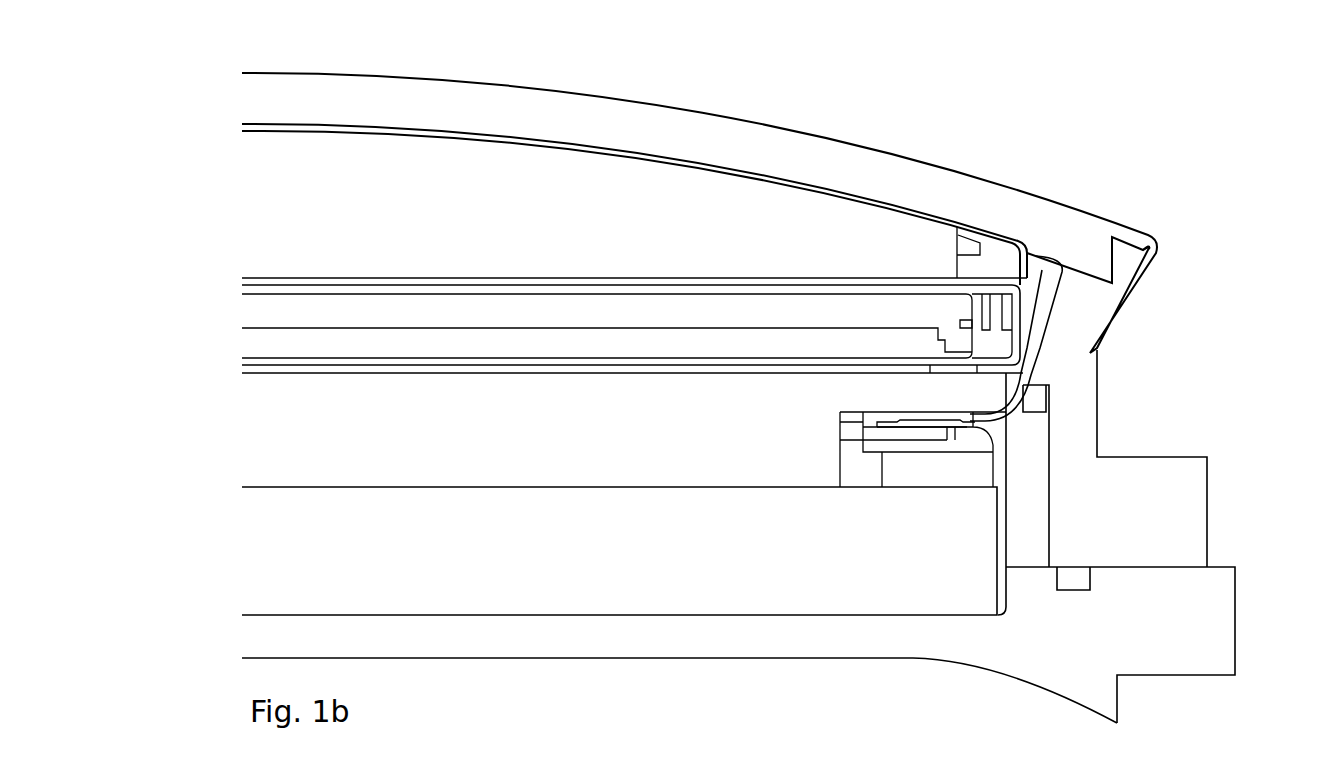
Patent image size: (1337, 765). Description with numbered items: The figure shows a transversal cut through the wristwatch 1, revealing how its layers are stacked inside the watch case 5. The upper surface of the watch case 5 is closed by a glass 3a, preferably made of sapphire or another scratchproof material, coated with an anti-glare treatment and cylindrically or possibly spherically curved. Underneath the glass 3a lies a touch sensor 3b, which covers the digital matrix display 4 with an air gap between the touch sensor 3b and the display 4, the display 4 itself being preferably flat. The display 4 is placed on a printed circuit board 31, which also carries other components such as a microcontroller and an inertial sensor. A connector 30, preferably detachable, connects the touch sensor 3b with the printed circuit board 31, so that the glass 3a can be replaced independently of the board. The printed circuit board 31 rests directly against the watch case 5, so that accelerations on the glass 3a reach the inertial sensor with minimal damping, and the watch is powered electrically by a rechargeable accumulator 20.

The wristwatch 1 is at (1260, 527).
The glass 3a is at (699, 213).
The touch sensor 3b is at (725, 175).
The digital matrix display 4 is at (634, 325).
The watch case 5 is at (1077, 414).
The rechargeable accumulator 20 is at (624, 494).
The connector 30 is at (1047, 327).
The printed circuit board 31 is at (798, 449).